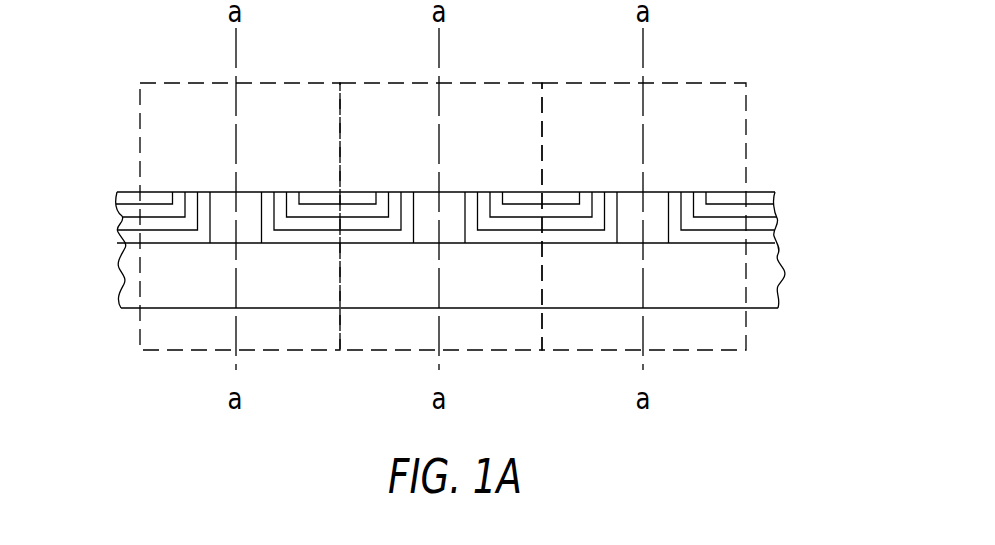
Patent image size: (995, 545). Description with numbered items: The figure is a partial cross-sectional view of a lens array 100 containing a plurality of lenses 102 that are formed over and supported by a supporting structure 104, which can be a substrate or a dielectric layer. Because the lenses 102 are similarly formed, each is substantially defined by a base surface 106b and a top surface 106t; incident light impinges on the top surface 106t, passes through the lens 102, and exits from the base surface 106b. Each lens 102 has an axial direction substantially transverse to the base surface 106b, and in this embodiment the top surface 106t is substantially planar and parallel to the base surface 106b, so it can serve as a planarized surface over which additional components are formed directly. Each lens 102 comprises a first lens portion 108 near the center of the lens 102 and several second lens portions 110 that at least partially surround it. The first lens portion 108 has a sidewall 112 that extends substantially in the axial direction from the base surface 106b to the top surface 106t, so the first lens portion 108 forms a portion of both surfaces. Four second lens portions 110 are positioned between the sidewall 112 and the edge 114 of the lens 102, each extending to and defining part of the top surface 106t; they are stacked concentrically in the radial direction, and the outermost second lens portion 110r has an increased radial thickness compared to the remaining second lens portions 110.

The lens array 100 is at (788, 178).
The lens 102 is at (160, 82).
The supporting structure 104 is at (769, 279).
The top surface 106t is at (131, 192).
The base surface 106b is at (131, 245).
The first lens portion 108 is at (224, 231).
The second lens portions 110 is at (415, 183).
The outermost second lens portion 110r is at (355, 197).
The sidewall 112 is at (412, 232).
The edge 114 is at (337, 233).